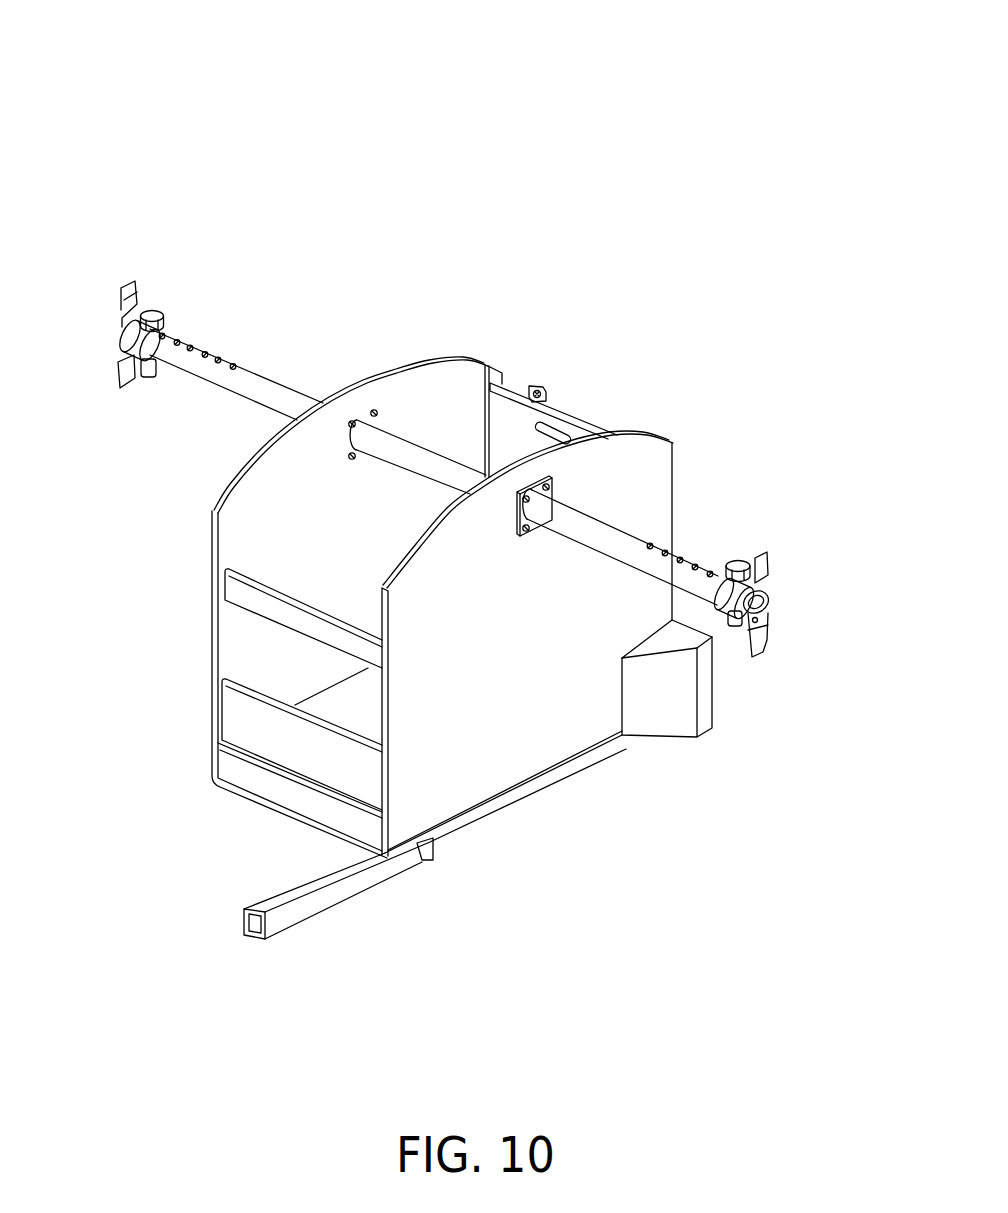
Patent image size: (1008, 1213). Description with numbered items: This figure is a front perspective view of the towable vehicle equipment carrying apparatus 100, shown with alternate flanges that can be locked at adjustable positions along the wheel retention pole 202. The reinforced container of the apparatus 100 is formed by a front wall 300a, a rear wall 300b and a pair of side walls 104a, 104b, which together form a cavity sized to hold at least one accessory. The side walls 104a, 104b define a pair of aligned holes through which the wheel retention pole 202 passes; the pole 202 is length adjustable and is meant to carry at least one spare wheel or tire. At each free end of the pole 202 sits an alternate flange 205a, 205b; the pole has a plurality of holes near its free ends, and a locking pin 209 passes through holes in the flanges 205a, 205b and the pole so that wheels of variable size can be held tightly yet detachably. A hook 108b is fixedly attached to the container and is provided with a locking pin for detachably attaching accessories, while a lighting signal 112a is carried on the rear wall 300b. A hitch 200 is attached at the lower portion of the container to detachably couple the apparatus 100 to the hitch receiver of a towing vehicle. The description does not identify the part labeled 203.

The towable vehicle equipment carrying apparatus 100 is at (192, 139).
The side wall 104a is at (533, 740).
The side wall 104b is at (267, 512).
The hook 108b is at (533, 386).
The lighting signal 112a is at (672, 703).
The hitch 200 is at (357, 938).
The wheel retention pole 202 is at (420, 457).
The shaft extension 203 is at (224, 360).
The alternate flange 205a is at (753, 658).
The alternate flange 205b is at (127, 293).
The locking pin 209 is at (152, 314).
The front wall 300a is at (250, 598).
The rear wall 300b is at (565, 427).